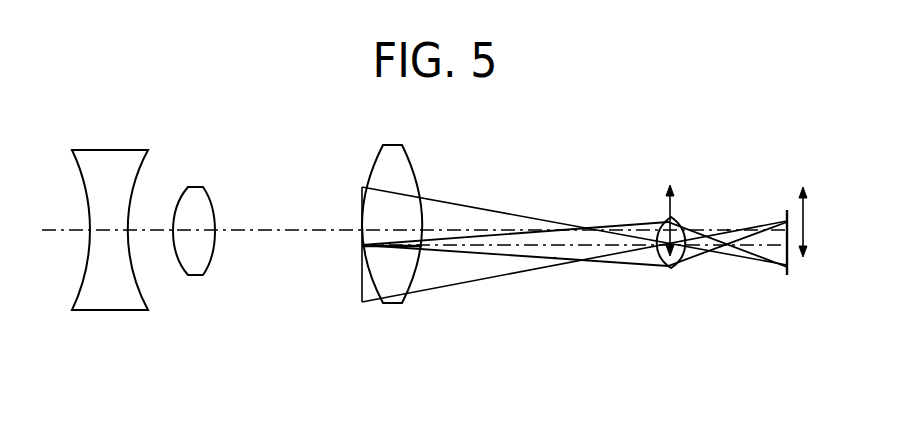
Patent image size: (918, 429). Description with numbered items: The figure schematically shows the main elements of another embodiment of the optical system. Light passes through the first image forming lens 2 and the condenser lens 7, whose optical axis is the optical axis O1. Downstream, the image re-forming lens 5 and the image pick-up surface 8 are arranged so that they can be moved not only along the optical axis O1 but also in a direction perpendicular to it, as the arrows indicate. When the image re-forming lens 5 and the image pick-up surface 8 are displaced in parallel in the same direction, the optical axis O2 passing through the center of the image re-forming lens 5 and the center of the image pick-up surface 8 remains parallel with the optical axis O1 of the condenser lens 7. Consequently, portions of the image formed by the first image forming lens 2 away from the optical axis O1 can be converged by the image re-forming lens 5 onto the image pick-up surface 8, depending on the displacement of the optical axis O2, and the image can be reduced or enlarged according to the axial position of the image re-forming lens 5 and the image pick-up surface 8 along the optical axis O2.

The first image forming lens 2 is at (67, 320).
The image re-forming lens 5 is at (660, 218).
The condenser lens 7 is at (390, 304).
The image pick-up surface 8 is at (787, 210).
The optical axis O1 is at (725, 226).
The optical axis O2 is at (548, 244).